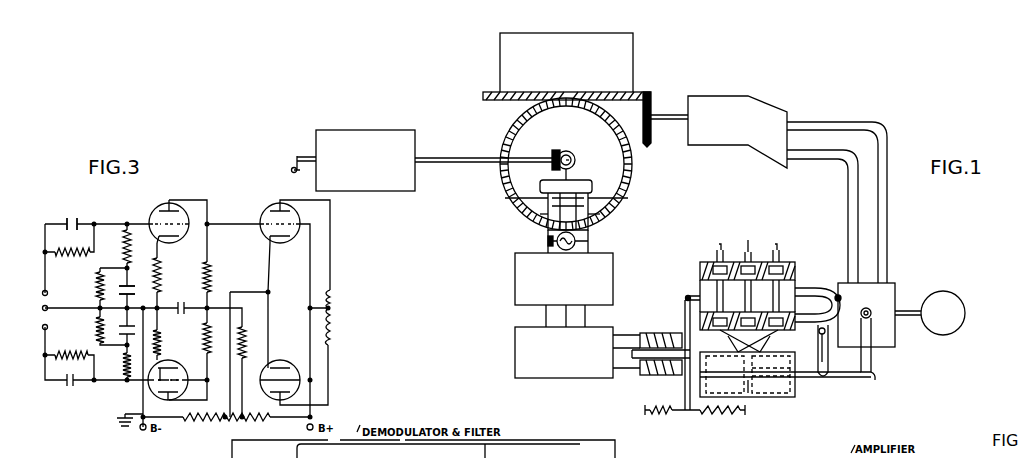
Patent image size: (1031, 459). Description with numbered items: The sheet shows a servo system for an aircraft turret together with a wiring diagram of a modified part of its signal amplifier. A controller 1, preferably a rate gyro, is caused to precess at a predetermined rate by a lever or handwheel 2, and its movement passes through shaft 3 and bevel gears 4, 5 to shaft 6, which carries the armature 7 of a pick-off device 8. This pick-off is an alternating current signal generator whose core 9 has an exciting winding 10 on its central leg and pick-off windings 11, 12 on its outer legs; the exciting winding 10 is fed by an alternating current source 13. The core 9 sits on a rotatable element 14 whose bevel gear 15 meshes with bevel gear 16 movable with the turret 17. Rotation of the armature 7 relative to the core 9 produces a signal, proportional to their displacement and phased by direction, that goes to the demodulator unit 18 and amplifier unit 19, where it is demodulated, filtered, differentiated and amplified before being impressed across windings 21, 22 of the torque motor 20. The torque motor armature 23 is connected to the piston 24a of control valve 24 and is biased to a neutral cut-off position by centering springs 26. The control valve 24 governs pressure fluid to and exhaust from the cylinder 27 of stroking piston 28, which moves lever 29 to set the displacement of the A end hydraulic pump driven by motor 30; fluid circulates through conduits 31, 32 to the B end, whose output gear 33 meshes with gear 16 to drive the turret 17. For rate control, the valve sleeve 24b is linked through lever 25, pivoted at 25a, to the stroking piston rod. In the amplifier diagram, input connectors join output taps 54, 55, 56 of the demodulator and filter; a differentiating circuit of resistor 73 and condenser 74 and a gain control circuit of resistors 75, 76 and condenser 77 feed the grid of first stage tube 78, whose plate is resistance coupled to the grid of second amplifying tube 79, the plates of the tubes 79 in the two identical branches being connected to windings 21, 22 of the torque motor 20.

In FIG. 1, the controller 1 is at (388, 135).
In FIG. 1, the lever or handwheel 2 is at (296, 156).
In FIG. 1, the shaft 3 is at (445, 158).
In FIG. 1, the bevel gear 4 is at (556, 150).
In FIG. 1, the bevel gear 5 is at (567, 150).
In FIG. 1, the shaft 6 is at (574, 156).
In FIG. 1, the armature 7 is at (540, 182).
In FIG. 1, the pick-off device 8 is at (592, 188).
In FIG. 1, the core 9 is at (540, 214).
In FIG. 1, the exciting winding 10 is at (600, 214).
In FIG. 1, the pick-off winding 11 is at (518, 198).
In FIG. 1, the pick-off winding 12 is at (616, 198).
In FIG. 1, the alternating current source 13 is at (548, 243).
In FIG. 1, the rotatable element 14 is at (503, 140).
In FIG. 1, the bevel gear 15 is at (519, 111).
In FIG. 1, the bevel gear 16 is at (484, 96).
In FIG. 1, the turret 17 is at (500, 46).
In FIG. 1, the demodulator unit 18 is at (515, 284).
In FIG. 1, the amplifier unit 19 is at (515, 340).
In FIG. 1, the torque motor 20 is at (678, 332).
In FIG. 1, the winding 21 is at (652, 338).
In FIG. 3, the winding 21 is at (335, 300).
In FIG. 1, the winding 22 is at (652, 375).
In FIG. 3, the winding 22 is at (333, 326).
In FIG. 1, the armature 23 is at (685, 380).
In FIG. 1, the control valve 24 is at (698, 268).
In FIG. 1, the piston 24a is at (698, 290).
In FIG. 1, the sleeve 24b is at (797, 272).
In FIG. 1, the lever 25 is at (767, 361).
In FIG. 1, the pivot 25a is at (818, 333).
In FIG. 1, the centering springs 26 is at (672, 418).
In FIG. 1, the cylinder 27 is at (795, 397).
In FIG. 1, the stroking piston 28 is at (749, 394).
In FIG. 1, the lever 29 is at (854, 352).
In FIG. 1, the motor 30 is at (956, 300).
In FIG. 1, the conduit 31 is at (848, 200).
In FIG. 1, the conduit 32 is at (886, 200).
In FIG. 1, the gear 33 is at (652, 100).
In FIG. 3, the output tap 54 is at (48, 294).
In FIG. 3, the output tap 55 is at (48, 310).
In FIG. 3, the output tap 56 is at (48, 329).
In FIG. 3, the resistor 73 is at (91, 255).
In FIG. 3, the condenser 74 is at (76, 218).
In FIG. 3, the resistor 75 is at (131, 251).
In FIG. 3, the resistor 76 is at (96, 290).
In FIG. 3, the condenser 77 is at (137, 290).
In FIG. 3, the tube 78 is at (158, 210).
In FIG. 3, the amplifying tube 79 is at (270, 212).